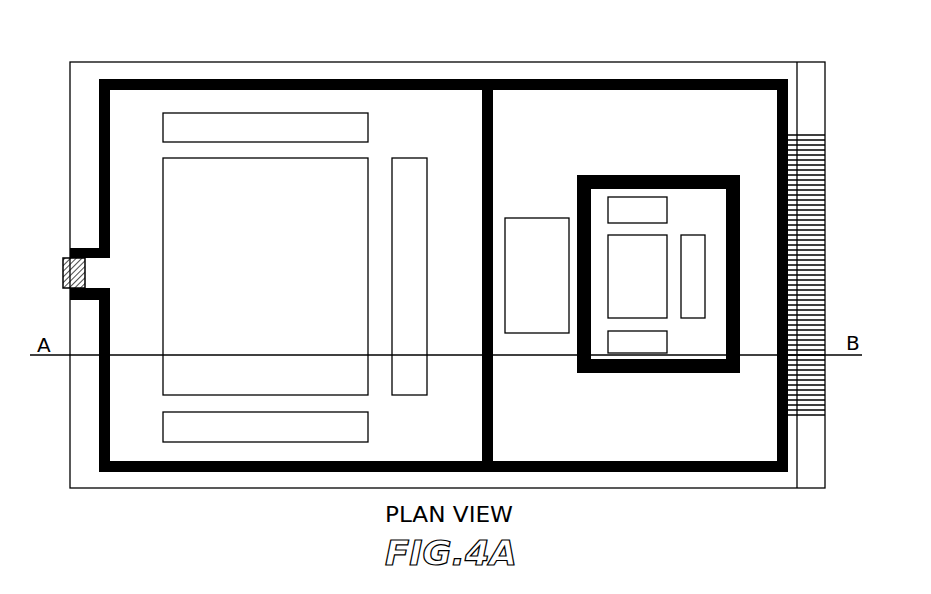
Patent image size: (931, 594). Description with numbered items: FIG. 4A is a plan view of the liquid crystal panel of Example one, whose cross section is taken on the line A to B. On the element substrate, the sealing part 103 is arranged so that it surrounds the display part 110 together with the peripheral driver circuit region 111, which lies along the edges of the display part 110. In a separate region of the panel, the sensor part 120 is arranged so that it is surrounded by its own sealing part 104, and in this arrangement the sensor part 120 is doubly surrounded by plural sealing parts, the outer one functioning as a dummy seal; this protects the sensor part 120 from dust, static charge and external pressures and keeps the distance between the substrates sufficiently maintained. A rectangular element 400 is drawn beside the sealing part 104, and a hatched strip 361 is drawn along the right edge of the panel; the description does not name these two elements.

The sealing part 103 is at (565, 80).
The display part 110 is at (177, 200).
The peripheral driver circuit region 111 is at (410, 178).
The rectangular component 400 is at (528, 230).
The sealing part 104 is at (653, 374).
The sensor part 120 is at (653, 312).
The hatched strip region 361 is at (810, 230).